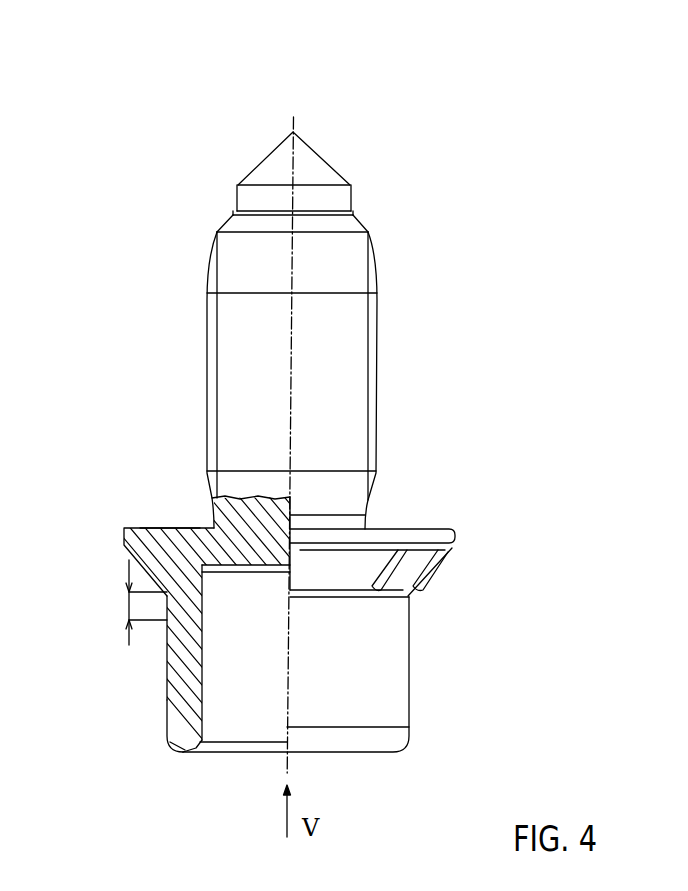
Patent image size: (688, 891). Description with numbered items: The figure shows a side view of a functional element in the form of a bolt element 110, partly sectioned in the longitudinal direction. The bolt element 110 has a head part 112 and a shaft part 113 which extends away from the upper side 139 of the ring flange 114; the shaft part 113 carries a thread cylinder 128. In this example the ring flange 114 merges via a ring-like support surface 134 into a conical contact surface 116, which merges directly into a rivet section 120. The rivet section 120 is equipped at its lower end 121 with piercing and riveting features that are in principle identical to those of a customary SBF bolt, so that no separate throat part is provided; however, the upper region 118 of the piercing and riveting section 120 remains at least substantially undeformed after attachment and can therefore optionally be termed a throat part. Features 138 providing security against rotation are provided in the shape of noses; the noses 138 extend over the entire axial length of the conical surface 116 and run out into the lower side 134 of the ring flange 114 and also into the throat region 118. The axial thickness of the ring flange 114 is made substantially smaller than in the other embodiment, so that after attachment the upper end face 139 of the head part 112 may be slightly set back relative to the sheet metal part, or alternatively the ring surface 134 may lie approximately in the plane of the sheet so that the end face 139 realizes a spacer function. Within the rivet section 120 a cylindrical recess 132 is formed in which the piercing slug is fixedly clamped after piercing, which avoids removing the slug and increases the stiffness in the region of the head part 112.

The bolt element 110 is at (458, 537).
The head part 112 is at (168, 673).
The shaft part 113 is at (377, 385).
The ring flange 114 is at (125, 535).
The conical contact surface 116 is at (407, 600).
The upper region of the piercing and riveting section 118 is at (128, 606).
The rivet section 120 is at (168, 712).
The lower end 121 is at (193, 750).
The thread cylinder 128 is at (373, 335).
The cylindrical recess 132 is at (203, 662).
The ring-like support surface 134 is at (345, 554).
The noses providing security against rotation 138 is at (435, 568).
The upper side of the ring flange 139 is at (163, 519).